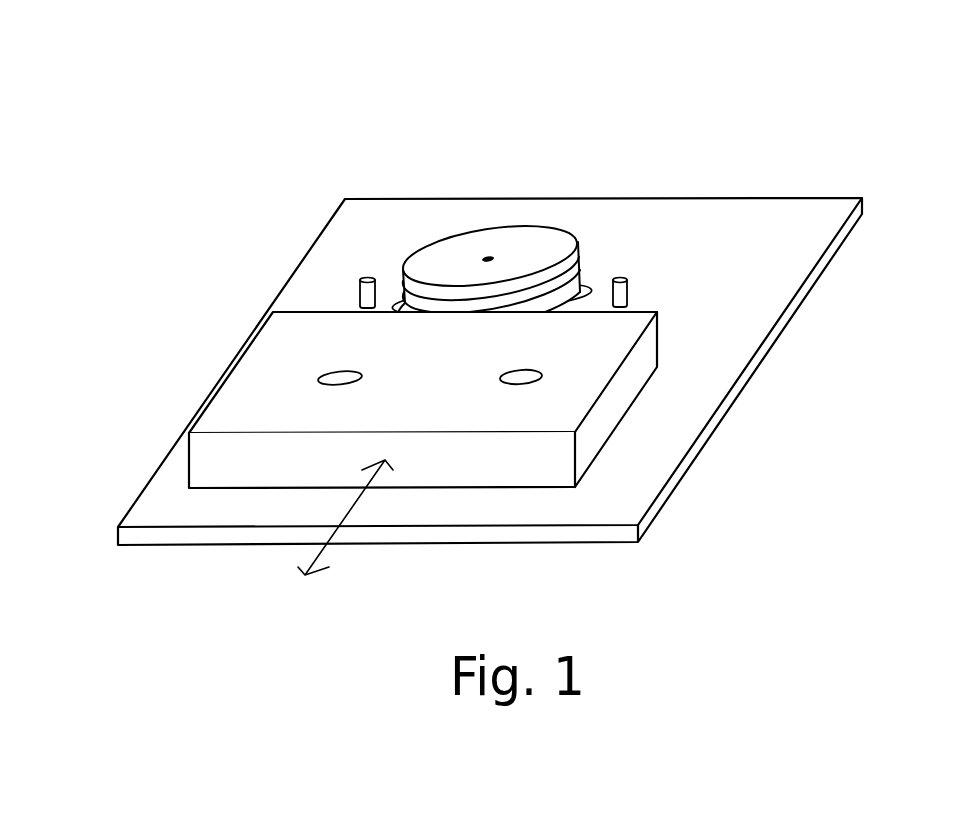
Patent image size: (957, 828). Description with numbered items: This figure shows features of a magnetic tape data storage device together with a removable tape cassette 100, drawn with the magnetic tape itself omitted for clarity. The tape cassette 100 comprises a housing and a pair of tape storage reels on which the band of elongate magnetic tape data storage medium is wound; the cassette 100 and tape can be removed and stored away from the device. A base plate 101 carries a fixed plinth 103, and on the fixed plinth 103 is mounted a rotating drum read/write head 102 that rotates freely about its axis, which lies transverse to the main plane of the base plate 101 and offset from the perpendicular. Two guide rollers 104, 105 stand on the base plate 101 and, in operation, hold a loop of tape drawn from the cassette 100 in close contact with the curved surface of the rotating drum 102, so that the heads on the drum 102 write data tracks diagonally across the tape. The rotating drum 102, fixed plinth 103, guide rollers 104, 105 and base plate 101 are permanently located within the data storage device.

The tape cassette 100 is at (477, 422).
The base plate 101 is at (842, 233).
The rotating drum read/write head 102 is at (470, 240).
The fixed plinth 103 is at (557, 278).
The guide roller 104 is at (363, 293).
The guide roller 105 is at (630, 288).